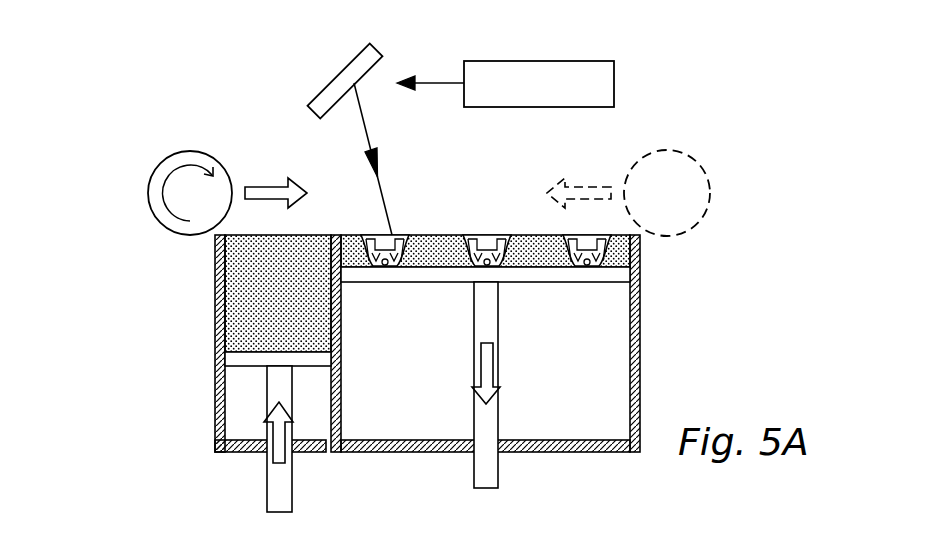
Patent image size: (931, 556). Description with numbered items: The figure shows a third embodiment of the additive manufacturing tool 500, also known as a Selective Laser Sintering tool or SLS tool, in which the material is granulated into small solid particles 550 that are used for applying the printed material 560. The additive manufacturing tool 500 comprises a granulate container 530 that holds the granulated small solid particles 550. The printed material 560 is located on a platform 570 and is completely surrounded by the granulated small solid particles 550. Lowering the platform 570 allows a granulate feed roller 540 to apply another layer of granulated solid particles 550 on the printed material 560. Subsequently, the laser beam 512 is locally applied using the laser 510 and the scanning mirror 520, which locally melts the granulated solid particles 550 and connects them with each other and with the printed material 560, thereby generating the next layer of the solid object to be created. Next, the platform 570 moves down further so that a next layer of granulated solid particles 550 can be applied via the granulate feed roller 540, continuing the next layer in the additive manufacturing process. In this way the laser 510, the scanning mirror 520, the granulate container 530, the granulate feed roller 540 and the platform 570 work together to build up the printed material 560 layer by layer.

The additive manufacturing tool 500 is at (136, 73).
The laser 510 is at (542, 75).
The laser beam 512 is at (380, 176).
The scanning mirror 520 is at (340, 80).
The granulate container 530 is at (220, 378).
The granulate feed roller 540 is at (152, 196).
The granulated small solid particles 550 is at (258, 308).
The printed material 560 is at (399, 266).
The platform 570 is at (620, 275).